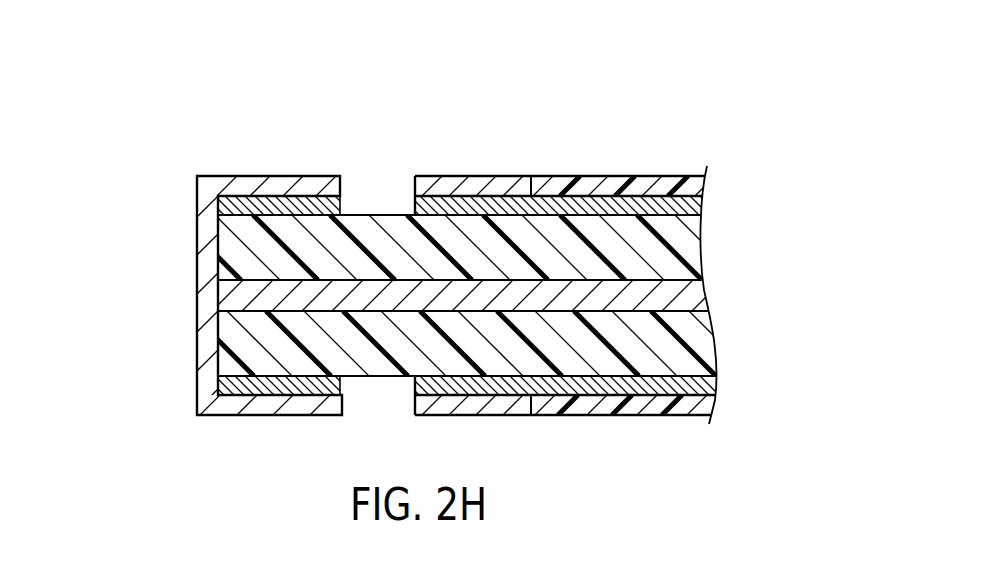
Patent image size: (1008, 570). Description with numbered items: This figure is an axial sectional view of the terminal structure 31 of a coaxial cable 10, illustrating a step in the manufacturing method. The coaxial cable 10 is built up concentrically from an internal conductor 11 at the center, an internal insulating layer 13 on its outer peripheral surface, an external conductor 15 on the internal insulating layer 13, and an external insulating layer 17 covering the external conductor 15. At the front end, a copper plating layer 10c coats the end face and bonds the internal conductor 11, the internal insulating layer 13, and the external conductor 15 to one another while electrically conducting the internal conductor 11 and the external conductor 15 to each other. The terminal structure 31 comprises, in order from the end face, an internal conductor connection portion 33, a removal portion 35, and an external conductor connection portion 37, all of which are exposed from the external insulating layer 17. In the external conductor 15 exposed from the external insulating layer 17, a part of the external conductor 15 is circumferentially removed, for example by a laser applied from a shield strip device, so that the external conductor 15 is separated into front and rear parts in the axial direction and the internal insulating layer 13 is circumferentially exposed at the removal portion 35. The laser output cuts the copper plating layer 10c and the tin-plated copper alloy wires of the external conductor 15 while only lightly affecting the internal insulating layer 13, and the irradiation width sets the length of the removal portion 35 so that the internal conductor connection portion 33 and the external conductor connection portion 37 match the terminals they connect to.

The coaxial cable 10 is at (658, 101).
The copper plating layer 10c is at (292, 256).
The internal conductor 11 is at (237, 291).
The internal insulating layer 13 is at (235, 245).
The external conductor 15 is at (261, 176).
The external insulating layer 17 is at (677, 176).
The terminal structure 31 is at (243, 246).
The internal conductor connection portion 33 is at (225, 163).
The removal portion 35 is at (380, 190).
The external conductor connection portion 37 is at (449, 158).